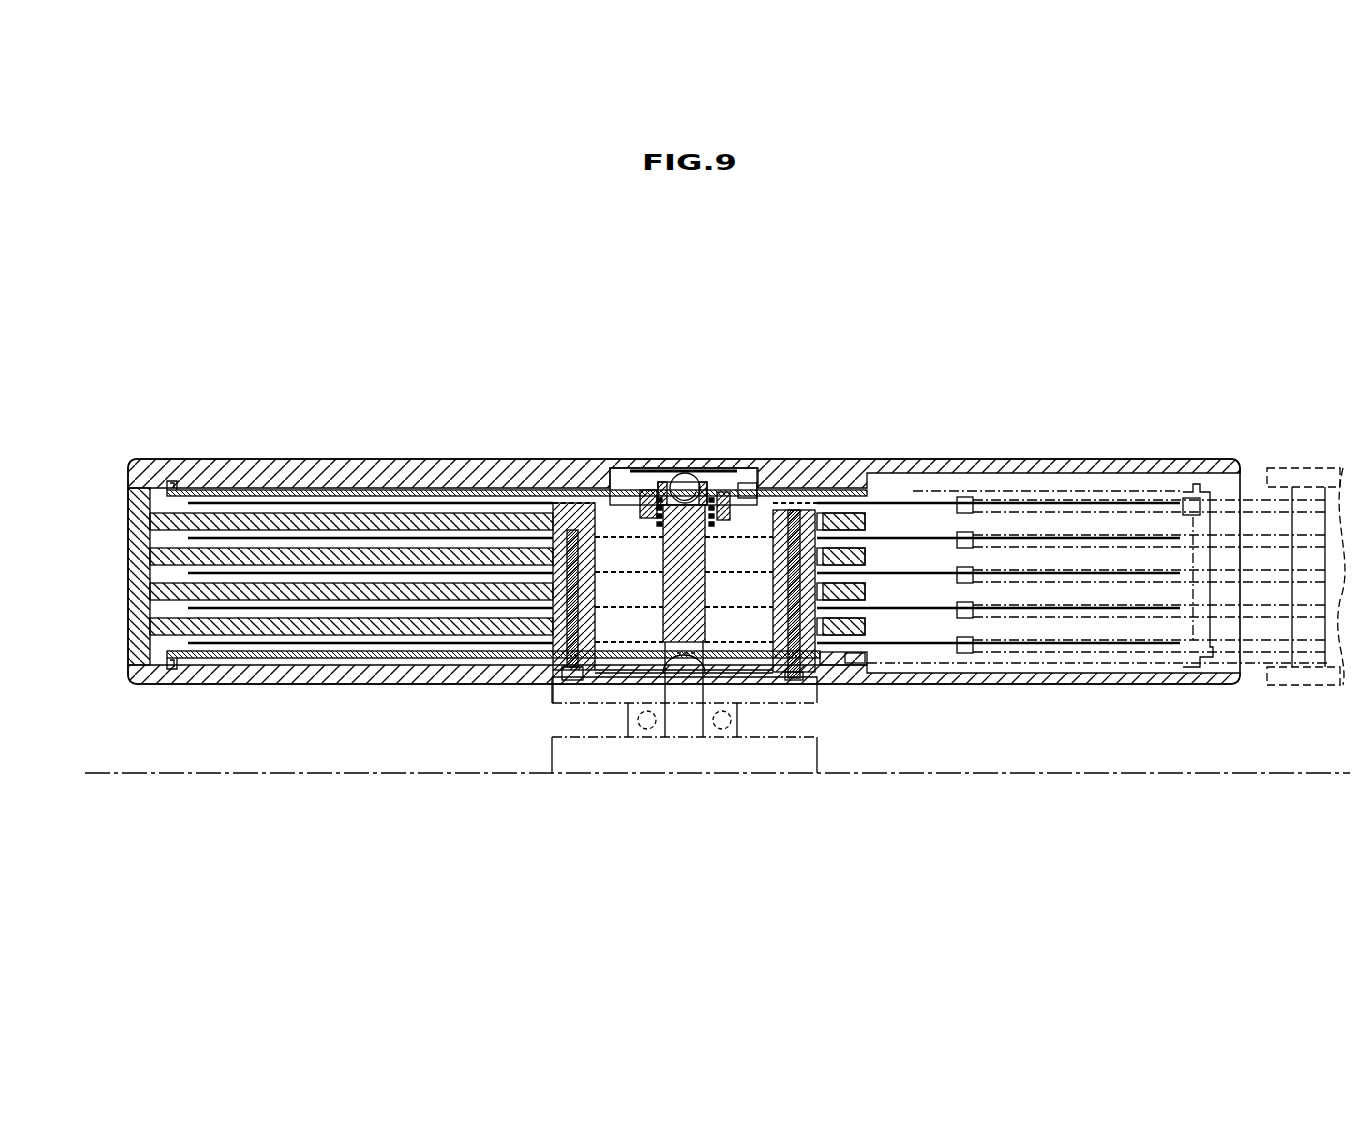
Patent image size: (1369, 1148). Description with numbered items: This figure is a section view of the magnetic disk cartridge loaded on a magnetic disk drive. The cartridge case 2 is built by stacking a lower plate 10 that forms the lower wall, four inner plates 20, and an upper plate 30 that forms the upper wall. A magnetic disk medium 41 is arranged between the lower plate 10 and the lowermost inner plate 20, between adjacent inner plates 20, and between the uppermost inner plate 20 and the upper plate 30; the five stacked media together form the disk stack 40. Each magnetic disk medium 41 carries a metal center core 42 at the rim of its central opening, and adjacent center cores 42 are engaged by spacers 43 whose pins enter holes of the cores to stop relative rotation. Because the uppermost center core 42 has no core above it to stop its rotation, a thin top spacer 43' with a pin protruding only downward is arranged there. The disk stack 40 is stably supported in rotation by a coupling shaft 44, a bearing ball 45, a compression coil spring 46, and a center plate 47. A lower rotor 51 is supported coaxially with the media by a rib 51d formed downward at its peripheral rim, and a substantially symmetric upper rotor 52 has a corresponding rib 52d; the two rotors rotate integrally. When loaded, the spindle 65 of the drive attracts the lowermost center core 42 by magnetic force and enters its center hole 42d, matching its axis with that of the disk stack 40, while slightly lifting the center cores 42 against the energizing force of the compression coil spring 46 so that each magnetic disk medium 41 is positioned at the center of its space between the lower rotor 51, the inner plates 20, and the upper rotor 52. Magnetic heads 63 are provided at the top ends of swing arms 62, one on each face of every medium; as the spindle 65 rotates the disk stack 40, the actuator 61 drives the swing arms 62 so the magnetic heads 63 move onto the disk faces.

The cartridge case 2 is at (668, 334).
The lower plate 10 is at (302, 689).
The inner plate 20 is at (124, 522).
The upper plate 30 is at (308, 456).
The disk stack 40 is at (684, 490).
The magnetic disk medium 41 is at (892, 643).
The center core 42 is at (614, 600).
The center hole 42d is at (690, 673).
The spacer 43 is at (774, 666).
The top spacer 43' is at (775, 456).
The coupling shaft 44 is at (700, 491).
The bearing ball 45 is at (672, 505).
The compression coil spring 46 is at (724, 492).
The center plate 47 is at (638, 493).
The lower rotor 51 is at (217, 658).
The rib 51d is at (168, 671).
The upper rotor 52 is at (228, 490).
The rib 52d is at (170, 480).
The actuator 61 is at (1280, 458).
The swing arm 62 is at (1265, 637).
The magnetic head 63 is at (988, 493).
The spindle 65 is at (836, 720).